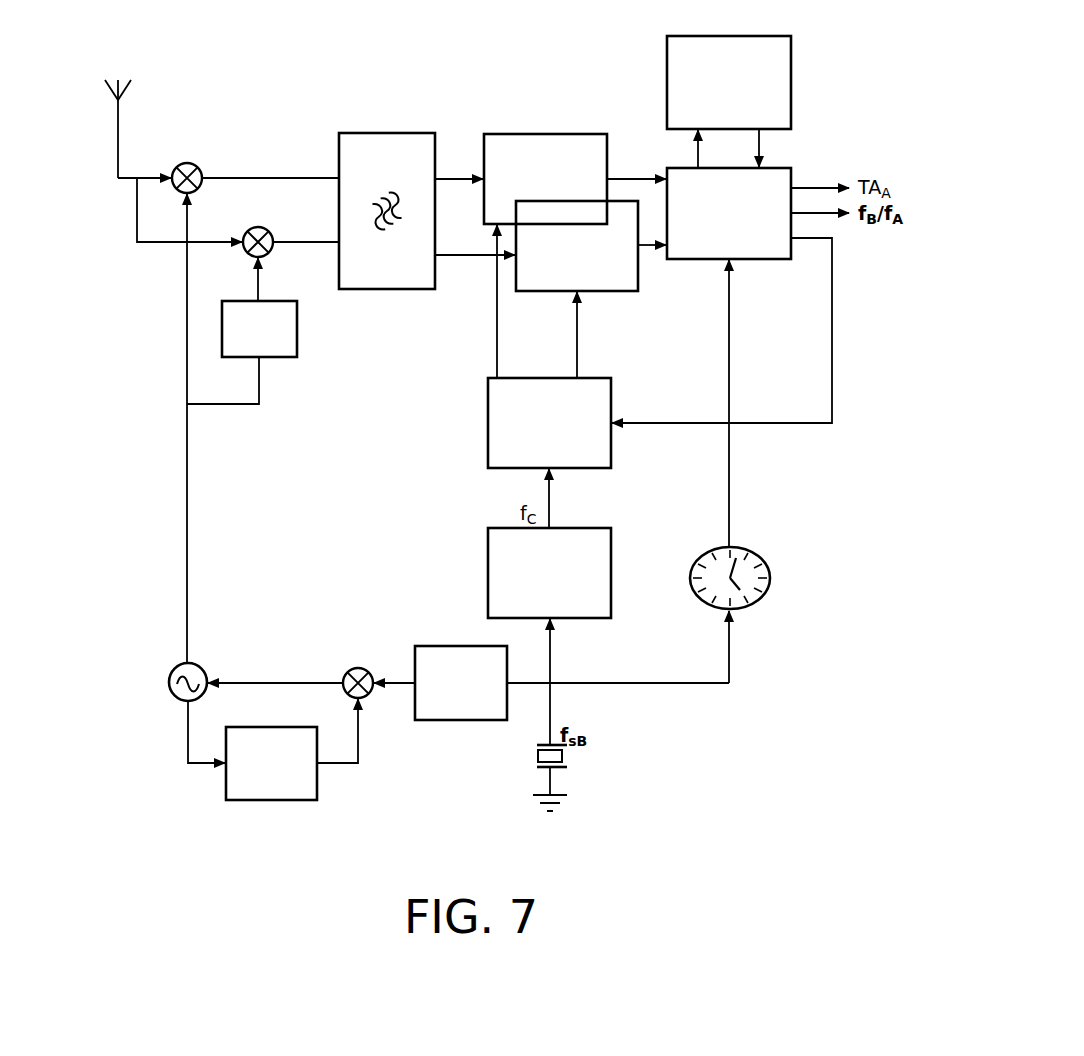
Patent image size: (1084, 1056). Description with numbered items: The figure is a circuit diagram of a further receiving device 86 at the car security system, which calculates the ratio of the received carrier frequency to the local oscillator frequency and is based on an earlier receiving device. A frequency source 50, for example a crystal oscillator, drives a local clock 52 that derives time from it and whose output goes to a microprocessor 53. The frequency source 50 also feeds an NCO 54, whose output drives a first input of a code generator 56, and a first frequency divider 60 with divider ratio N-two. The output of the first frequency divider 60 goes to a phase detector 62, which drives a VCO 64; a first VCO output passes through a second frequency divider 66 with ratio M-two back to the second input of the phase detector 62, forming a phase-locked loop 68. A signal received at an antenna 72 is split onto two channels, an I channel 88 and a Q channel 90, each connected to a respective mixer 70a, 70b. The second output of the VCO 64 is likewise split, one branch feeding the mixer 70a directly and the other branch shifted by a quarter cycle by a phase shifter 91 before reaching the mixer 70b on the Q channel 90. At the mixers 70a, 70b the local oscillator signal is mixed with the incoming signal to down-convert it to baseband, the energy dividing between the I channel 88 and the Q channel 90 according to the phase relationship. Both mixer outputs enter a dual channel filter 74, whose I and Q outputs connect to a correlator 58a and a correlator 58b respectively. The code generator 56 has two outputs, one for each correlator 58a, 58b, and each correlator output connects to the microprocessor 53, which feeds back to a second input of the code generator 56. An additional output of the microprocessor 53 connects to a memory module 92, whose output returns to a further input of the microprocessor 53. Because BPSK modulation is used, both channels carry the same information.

The further receiving device 86 is at (196, 60).
The antenna 72 is at (116, 130).
The I channel 88 is at (150, 171).
The mixer 70a is at (187, 162).
The mixer 70b is at (257, 227).
The Q channel 90 is at (166, 244).
The phase shifter 91 is at (297, 327).
The dual channel filter 74 is at (387, 133).
The correlator 58a is at (545, 134).
The correlator 58b is at (615, 291).
The memory module 92 is at (667, 82).
The microprocessor 53 is at (774, 260).
The code generator 56 is at (488, 423).
The NCO (Numerically Controlled Oscillator) 54 is at (488, 561).
The local clock 52 is at (770, 578).
The first frequency divider 60 is at (450, 646).
The phase detector 62 is at (358, 668).
The VCO (Voltage Controlled Oscillator) 64 is at (169, 683).
The phase-locked loop (PLL) 68 is at (171, 736).
The second frequency divider 66 is at (246, 801).
The frequency source 50 is at (567, 756).